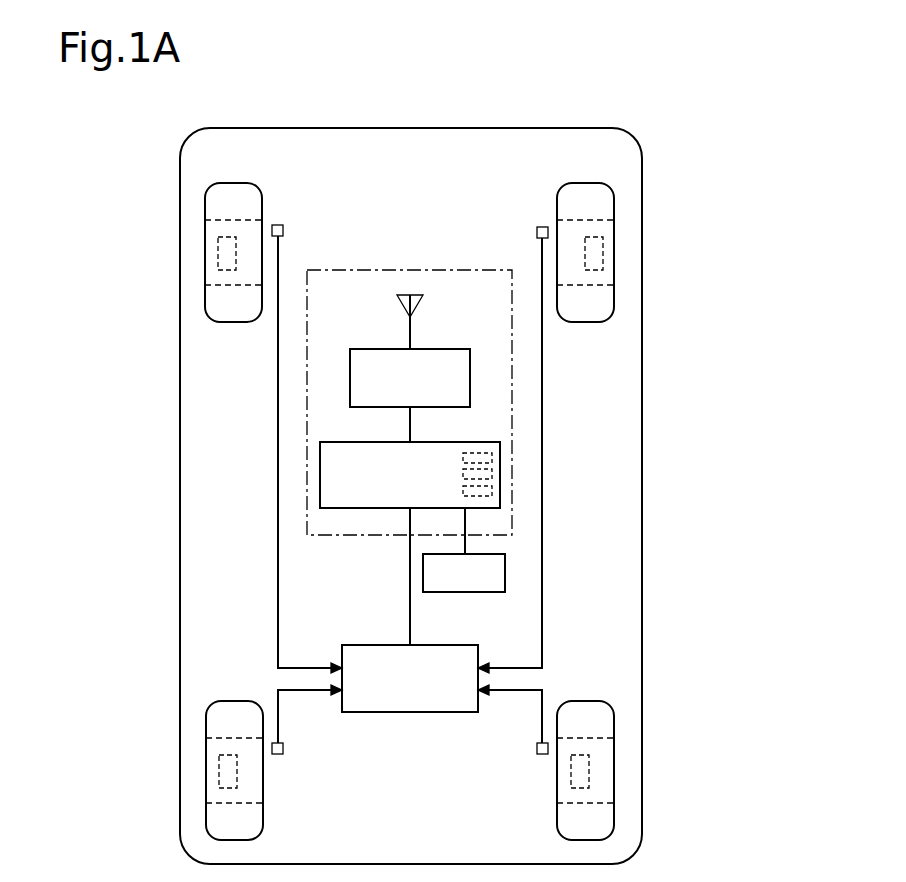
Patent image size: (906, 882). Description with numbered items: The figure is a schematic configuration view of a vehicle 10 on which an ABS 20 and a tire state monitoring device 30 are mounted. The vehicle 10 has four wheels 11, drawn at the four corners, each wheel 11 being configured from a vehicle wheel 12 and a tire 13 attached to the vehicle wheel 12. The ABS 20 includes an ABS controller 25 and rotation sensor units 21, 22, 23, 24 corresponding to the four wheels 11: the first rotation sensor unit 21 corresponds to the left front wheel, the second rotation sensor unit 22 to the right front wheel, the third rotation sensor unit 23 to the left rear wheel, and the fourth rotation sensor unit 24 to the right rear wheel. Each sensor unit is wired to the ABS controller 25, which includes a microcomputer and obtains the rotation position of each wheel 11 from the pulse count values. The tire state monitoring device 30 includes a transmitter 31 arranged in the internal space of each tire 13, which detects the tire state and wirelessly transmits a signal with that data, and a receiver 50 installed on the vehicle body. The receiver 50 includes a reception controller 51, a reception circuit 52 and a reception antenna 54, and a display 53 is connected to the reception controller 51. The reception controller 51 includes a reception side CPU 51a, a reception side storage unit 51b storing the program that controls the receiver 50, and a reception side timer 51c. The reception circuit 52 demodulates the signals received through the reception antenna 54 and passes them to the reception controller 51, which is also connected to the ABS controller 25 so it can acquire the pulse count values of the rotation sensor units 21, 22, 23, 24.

The vehicle 10 is at (619, 113).
The wheel 11 is at (418, 510).
The vehicle wheel 12 is at (212, 218).
The tire 13 is at (218, 205).
The transmitter 31 is at (218, 253).
The ABS 20 is at (546, 405).
The first rotation sensor unit 21 is at (280, 224).
The second rotation sensor unit 22 is at (535, 226).
The third rotation sensor unit 23 is at (280, 755).
The fourth rotation sensor unit 24 is at (540, 755).
The ABS controller 25 is at (410, 712).
The tire state monitoring device 30 is at (478, 673).
The receiver 50 is at (454, 457).
The reception controller 51 is at (461, 528).
The reception side CPU 51a is at (492, 491).
The reception side storage unit 51b is at (492, 474).
The reception side timer 51c is at (492, 458).
The reception circuit 52 is at (427, 346).
The display 53 is at (464, 592).
The reception antenna 54 is at (418, 291).